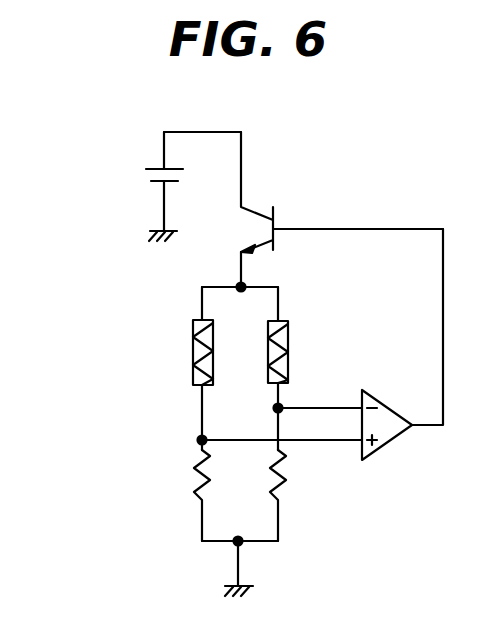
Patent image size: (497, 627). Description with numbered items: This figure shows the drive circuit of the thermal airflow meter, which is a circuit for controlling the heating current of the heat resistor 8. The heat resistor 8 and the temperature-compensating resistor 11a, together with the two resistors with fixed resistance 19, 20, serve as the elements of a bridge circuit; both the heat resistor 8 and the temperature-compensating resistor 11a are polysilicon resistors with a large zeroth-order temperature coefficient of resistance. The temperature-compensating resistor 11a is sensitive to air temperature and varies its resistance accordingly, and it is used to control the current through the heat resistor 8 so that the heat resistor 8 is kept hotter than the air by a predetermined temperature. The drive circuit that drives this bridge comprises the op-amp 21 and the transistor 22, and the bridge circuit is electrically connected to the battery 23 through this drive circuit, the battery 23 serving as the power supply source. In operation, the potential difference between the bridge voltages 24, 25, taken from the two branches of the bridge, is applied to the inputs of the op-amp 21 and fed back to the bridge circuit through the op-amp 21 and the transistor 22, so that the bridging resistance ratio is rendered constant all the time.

The battery 23 is at (143, 175).
The transistor 22 is at (277, 215).
The heat resistor 8 is at (192, 350).
The temperature-compensating resistor 11a is at (288, 340).
The bridge voltage 25 is at (280, 405).
The bridge voltage 24 is at (197, 440).
The resistor with fixed resistance 19 is at (192, 488).
The resistor with fixed resistance 20 is at (287, 490).
The op-amp 21 is at (400, 435).